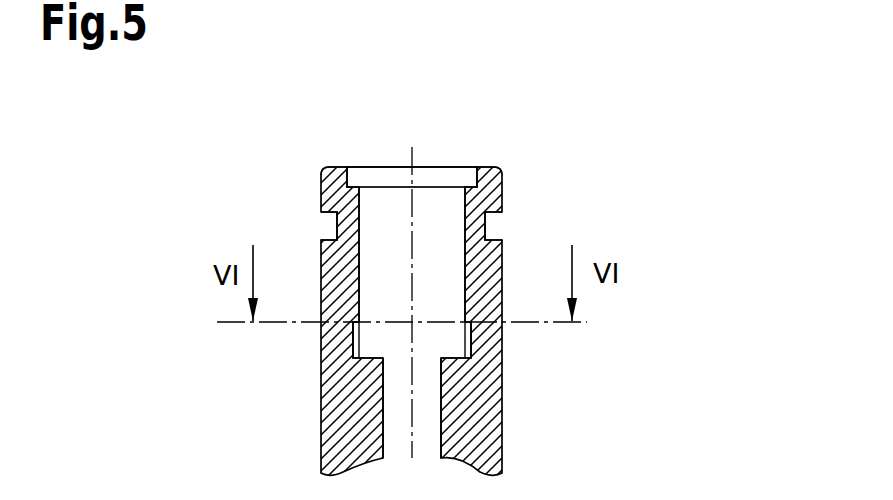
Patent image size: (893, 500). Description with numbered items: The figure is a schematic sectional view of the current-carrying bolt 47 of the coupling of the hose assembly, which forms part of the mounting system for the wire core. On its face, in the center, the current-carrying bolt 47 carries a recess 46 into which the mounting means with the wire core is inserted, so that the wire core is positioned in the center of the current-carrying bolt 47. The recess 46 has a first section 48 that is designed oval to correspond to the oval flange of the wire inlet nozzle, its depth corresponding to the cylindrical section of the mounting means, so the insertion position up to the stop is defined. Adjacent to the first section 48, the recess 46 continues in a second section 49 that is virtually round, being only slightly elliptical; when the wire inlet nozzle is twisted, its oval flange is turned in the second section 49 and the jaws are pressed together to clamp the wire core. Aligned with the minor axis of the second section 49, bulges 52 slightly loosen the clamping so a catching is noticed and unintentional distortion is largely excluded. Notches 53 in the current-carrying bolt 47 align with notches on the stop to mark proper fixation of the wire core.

The recess 46 is at (372, 142).
The current-carrying bolt 47 is at (205, 228).
The first section 48 is at (440, 257).
The second section 49 is at (438, 340).
The bulges 52 is at (465, 335).
The notches 53 is at (321, 190).